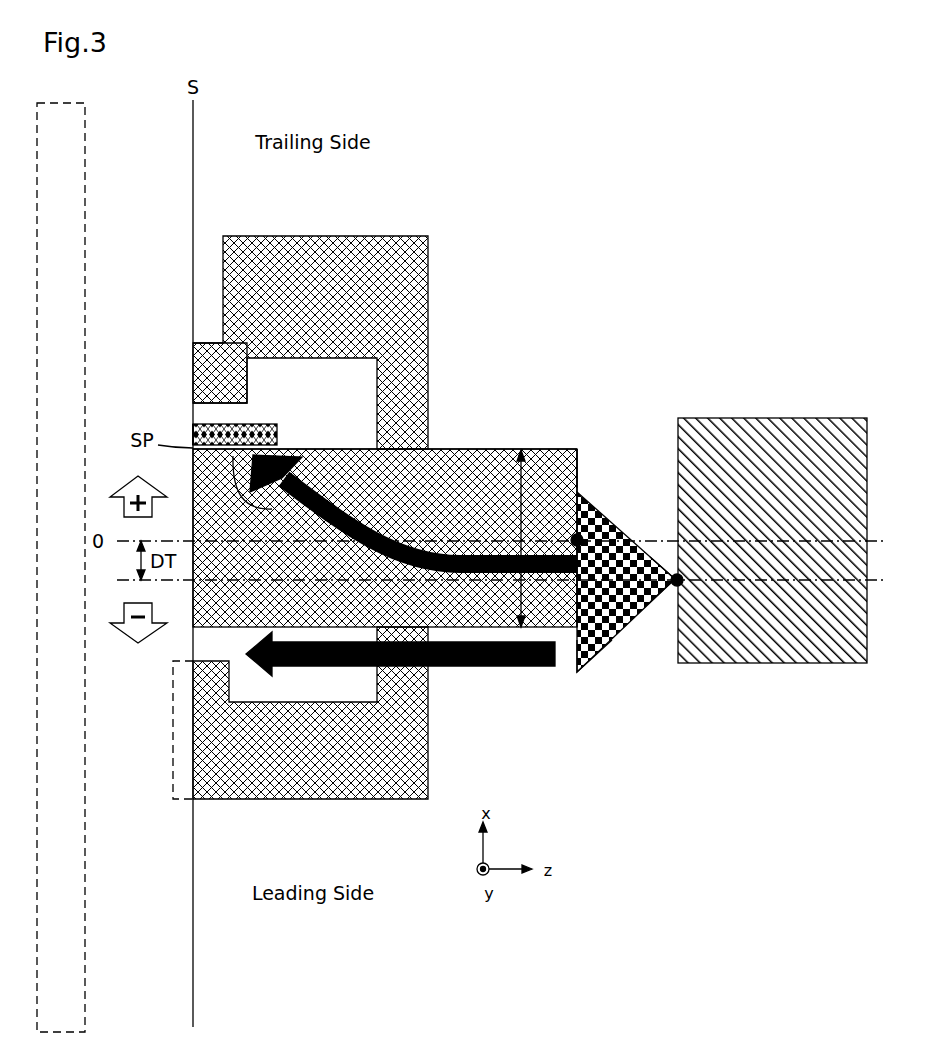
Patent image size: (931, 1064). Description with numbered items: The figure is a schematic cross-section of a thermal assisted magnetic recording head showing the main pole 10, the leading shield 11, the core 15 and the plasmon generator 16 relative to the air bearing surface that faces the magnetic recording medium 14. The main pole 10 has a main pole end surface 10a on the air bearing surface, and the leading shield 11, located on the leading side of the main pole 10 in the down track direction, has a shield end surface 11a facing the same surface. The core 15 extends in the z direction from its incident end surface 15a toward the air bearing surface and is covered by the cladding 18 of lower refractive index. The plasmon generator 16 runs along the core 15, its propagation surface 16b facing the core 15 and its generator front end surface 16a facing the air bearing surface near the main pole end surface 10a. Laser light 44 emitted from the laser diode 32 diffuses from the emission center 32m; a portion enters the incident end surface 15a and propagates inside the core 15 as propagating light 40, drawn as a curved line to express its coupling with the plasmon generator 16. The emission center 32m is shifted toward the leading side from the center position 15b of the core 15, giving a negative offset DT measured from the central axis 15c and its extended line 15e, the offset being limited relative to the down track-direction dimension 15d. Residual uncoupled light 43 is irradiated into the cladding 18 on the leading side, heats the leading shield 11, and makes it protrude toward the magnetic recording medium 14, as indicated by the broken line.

The main pole 10 is at (337, 236).
The main pole end surface 10a is at (193, 372).
The leading shield 11 is at (320, 799).
The shield end surface 11a is at (193, 755).
The magnetic recording medium 14 is at (85, 913).
The core 15 is at (510, 450).
The incident end surface 15a is at (578, 470).
The center position 15b is at (585, 508).
The central axis 15c is at (550, 536).
The down track-direction dimension 15d is at (502, 473).
The extended line 15e is at (663, 537).
The plasmon generator 16 is at (262, 424).
The generator front end surface 16a is at (193, 433).
The propagation surface 16b is at (308, 480).
The cladding 18 is at (543, 713).
The laser diode 32 is at (795, 418).
The emission center 32m is at (672, 586).
The propagating light 40 is at (446, 540).
The uncoupled light 43 is at (500, 670).
The laser light 44 is at (603, 650).